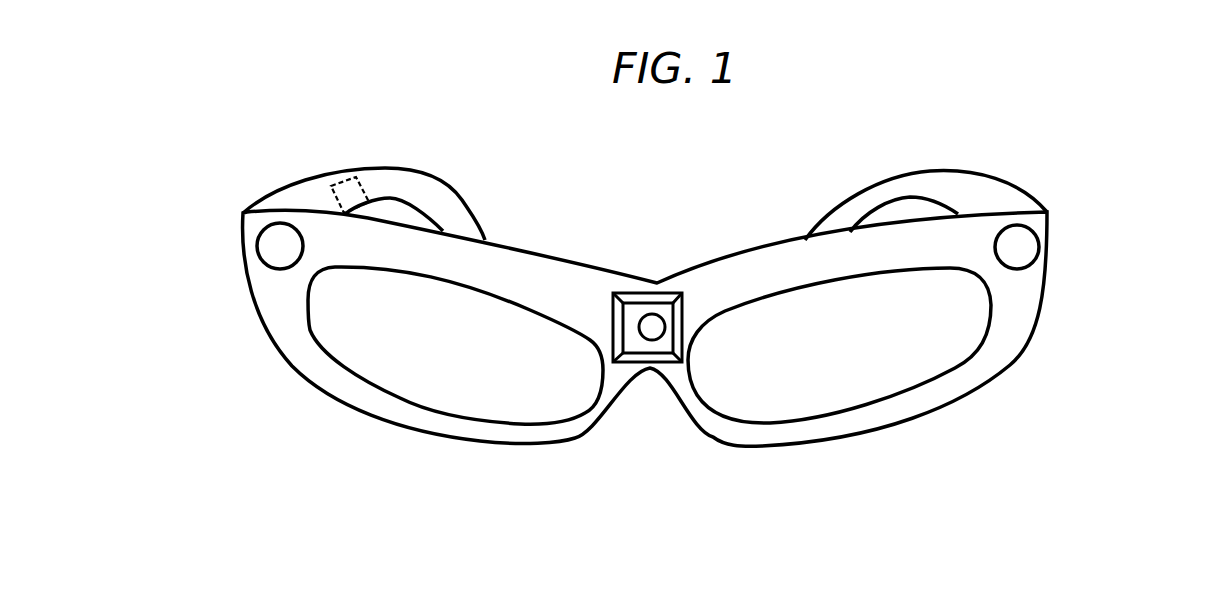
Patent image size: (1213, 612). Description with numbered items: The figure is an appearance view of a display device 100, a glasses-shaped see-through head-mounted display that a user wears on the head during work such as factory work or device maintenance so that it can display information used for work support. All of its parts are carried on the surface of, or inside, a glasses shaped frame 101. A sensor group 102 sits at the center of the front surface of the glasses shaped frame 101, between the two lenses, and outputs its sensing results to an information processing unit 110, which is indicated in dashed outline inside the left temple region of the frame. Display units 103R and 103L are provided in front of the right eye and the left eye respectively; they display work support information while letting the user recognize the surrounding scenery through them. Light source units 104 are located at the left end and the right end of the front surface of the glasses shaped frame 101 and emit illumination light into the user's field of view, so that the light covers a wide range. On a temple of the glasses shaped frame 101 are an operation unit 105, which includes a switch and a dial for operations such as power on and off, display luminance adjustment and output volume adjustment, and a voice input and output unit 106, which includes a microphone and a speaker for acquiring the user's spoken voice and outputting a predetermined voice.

The display device 100 is at (668, 342).
The glasses shaped frame 101 is at (295, 352).
The sensor group 102 is at (639, 345).
The display unit 103R is at (448, 303).
The display unit 103L is at (718, 332).
The light source unit 104 is at (272, 250).
The operation unit 105 is at (1025, 197).
The voice input and output unit 106 is at (972, 188).
The information processing unit 110 is at (348, 182).